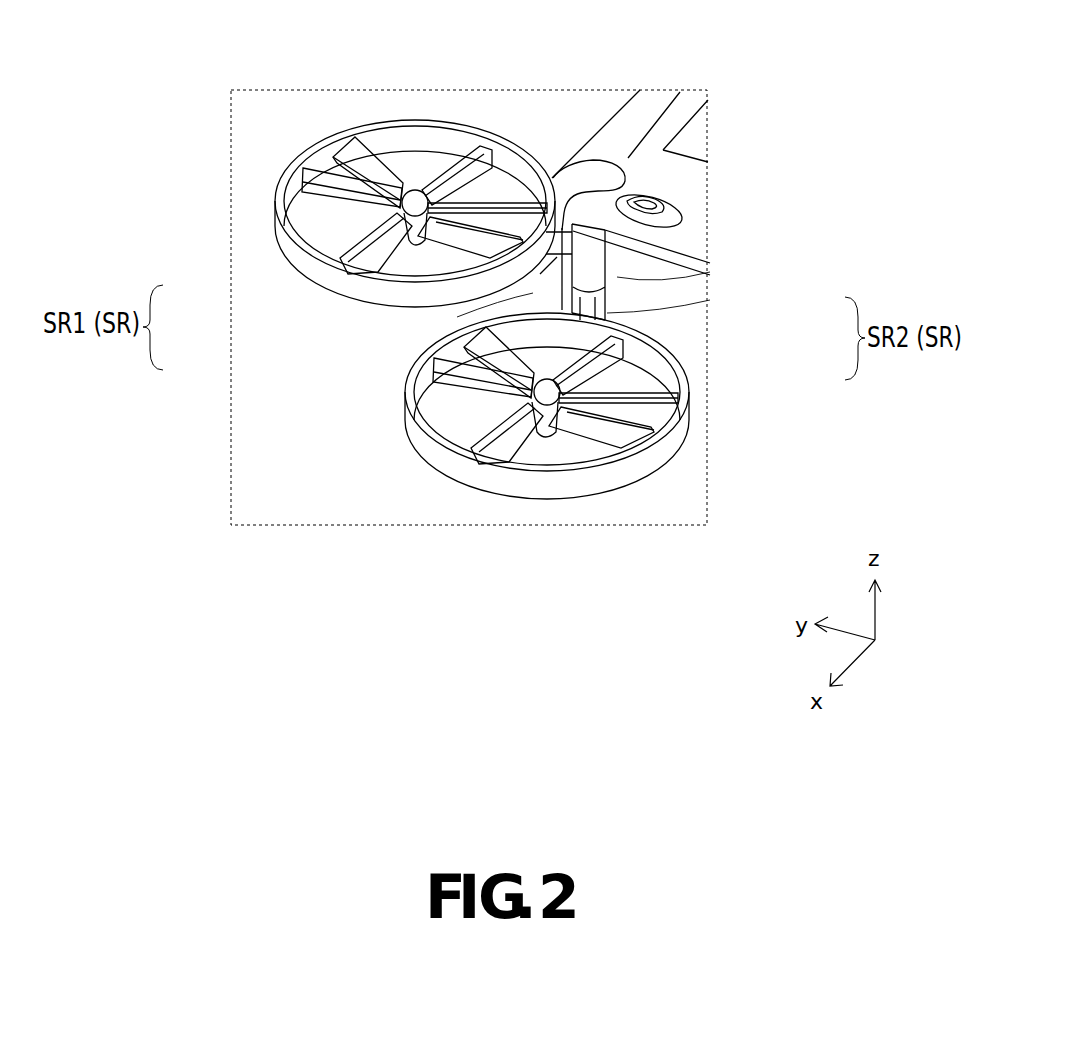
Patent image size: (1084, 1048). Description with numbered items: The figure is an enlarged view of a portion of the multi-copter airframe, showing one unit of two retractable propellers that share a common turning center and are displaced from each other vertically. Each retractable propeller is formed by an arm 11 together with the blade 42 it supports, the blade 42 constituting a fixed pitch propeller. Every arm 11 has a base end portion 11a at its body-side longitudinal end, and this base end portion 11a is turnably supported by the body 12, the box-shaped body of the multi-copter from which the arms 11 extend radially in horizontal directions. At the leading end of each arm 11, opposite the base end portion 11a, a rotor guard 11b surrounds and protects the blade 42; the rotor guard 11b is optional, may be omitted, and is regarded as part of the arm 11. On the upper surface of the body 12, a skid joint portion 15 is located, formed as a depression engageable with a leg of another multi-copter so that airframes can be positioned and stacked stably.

The arm 11 is at (536, 296).
The base end portion 11a is at (607, 293).
The rotor guard 11b is at (403, 117).
The body 12 is at (655, 163).
The skid joint portion 15 is at (655, 197).
The blade 42 is at (408, 205).